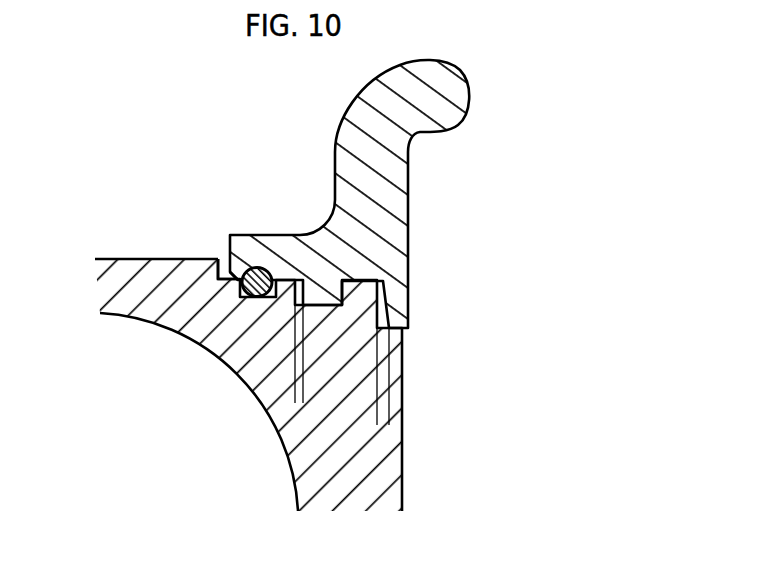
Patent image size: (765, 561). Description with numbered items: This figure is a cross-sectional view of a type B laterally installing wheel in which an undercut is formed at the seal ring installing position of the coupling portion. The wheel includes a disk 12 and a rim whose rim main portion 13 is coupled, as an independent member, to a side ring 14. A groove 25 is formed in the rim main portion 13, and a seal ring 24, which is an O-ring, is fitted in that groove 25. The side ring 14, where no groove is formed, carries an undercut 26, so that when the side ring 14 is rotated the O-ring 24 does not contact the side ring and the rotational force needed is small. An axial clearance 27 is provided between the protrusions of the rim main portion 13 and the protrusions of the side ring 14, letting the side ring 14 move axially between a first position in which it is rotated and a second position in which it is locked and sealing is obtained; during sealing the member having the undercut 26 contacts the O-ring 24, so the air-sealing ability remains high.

The disk 12 is at (397, 472).
The rim main portion 13 is at (128, 299).
The side ring 14 is at (395, 175).
The seal ring 24 is at (228, 258).
The groove 25 is at (195, 342).
The undercut 26 is at (278, 268).
The axial clearance 27 is at (322, 391).